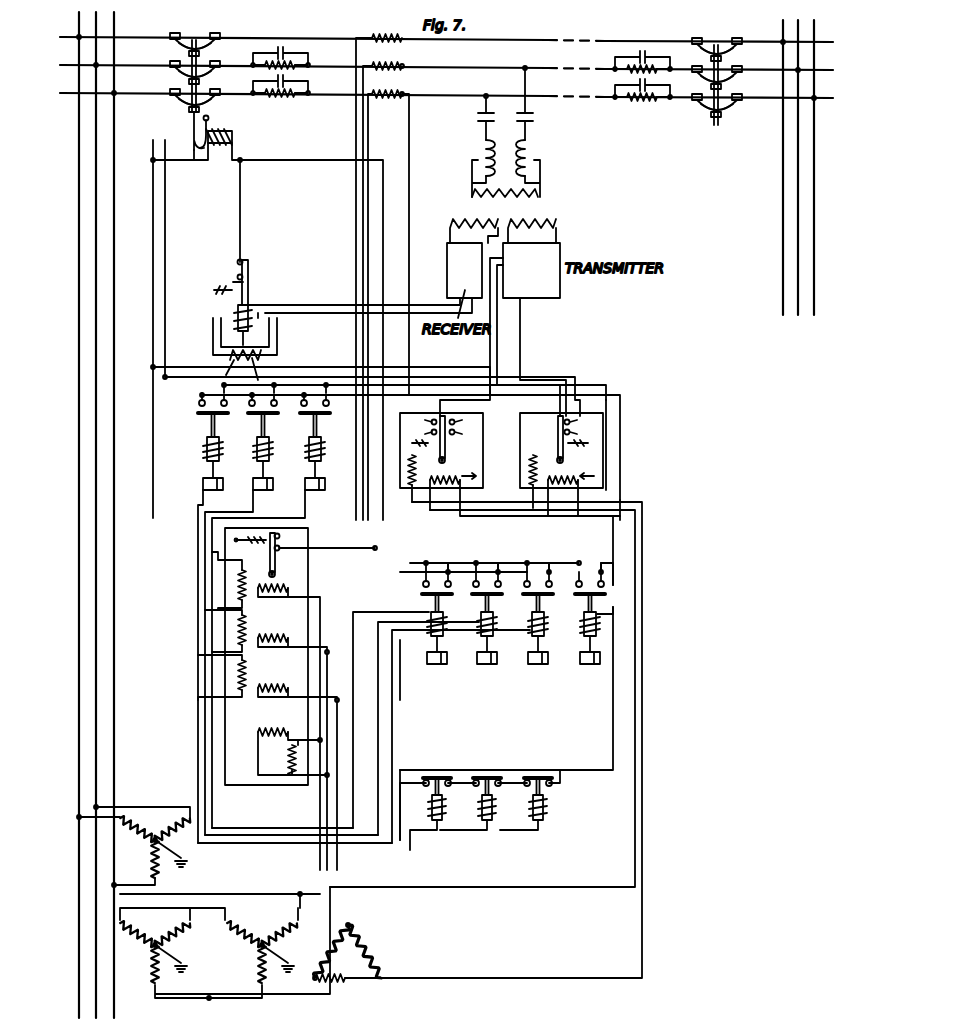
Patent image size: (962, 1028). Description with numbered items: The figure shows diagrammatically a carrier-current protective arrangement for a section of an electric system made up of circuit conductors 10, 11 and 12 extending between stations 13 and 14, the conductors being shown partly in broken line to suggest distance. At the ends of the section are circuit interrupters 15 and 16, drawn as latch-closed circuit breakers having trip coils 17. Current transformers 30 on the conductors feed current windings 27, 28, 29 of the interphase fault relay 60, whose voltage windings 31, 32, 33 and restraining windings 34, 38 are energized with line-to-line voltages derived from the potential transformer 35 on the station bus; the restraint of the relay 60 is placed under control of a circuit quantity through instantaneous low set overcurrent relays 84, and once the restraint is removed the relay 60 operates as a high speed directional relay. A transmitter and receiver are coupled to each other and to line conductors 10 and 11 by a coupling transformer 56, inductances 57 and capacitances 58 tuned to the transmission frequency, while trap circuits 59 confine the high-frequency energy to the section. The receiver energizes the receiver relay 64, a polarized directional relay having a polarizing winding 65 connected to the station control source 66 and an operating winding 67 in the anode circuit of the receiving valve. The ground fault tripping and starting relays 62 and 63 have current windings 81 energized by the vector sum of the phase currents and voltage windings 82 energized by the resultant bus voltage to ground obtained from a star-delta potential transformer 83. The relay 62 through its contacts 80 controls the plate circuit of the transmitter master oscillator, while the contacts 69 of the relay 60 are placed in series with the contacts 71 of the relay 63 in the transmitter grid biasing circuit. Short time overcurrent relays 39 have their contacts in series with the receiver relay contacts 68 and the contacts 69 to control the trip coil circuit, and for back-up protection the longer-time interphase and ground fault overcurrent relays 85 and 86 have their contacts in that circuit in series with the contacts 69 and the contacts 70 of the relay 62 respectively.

The circuit conductor 10 is at (470, 97).
The circuit conductor 11 is at (478, 69).
The circuit conductor 12 is at (486, 40).
The station 13 is at (84, 515).
The station 14 is at (798, 180).
The circuit interrupter 15 is at (206, 100).
The circuit interrupter 16 is at (706, 106).
The trip coil 17 is at (228, 137).
The current winding 27 is at (247, 675).
The current winding 28 is at (247, 630).
The current winding 29 is at (247, 585).
The current transformer 30 is at (385, 43).
The voltage winding 31 is at (284, 690).
The voltage winding 32 is at (284, 640).
The voltage winding 33 is at (284, 590).
The restraining winding 34 is at (284, 733).
The potential transformer 35 is at (134, 853).
The restraining winding 38 is at (290, 750).
The overcurrent relay 39 is at (206, 442).
The coupling transformer 56 is at (542, 201).
The inductance 57 is at (522, 158).
The capacitance 58 is at (519, 115).
The trap circuit 59 is at (308, 60).
The interphase fault relay 60 is at (309, 576).
The ground fault tripping relay 62 is at (483, 438).
The ground fault starting relay 63 is at (604, 445).
The receiver relay 64 is at (272, 352).
The polarizing winding 65 is at (244, 344).
The station control source 66 is at (154, 220).
The operating winding 67 is at (238, 318).
The receiver relay contacts 68 is at (238, 277).
The interphase fault relay contacts 69 is at (279, 536).
The ground fault relay contacts 70 is at (460, 423).
The ground fault starting relay contacts 71 is at (575, 423).
The ground fault tripping relay contacts 80 is at (428, 423).
The current winding 81 is at (418, 470).
The voltage winding 82 is at (450, 476).
The star-delta potential transformer 83 is at (251, 943).
The instantaneous low set overcurrent relay 84 is at (446, 805).
The interphase fault overcurrent relay 85 is at (443, 634).
The ground fault overcurrent relay 86 is at (598, 622).